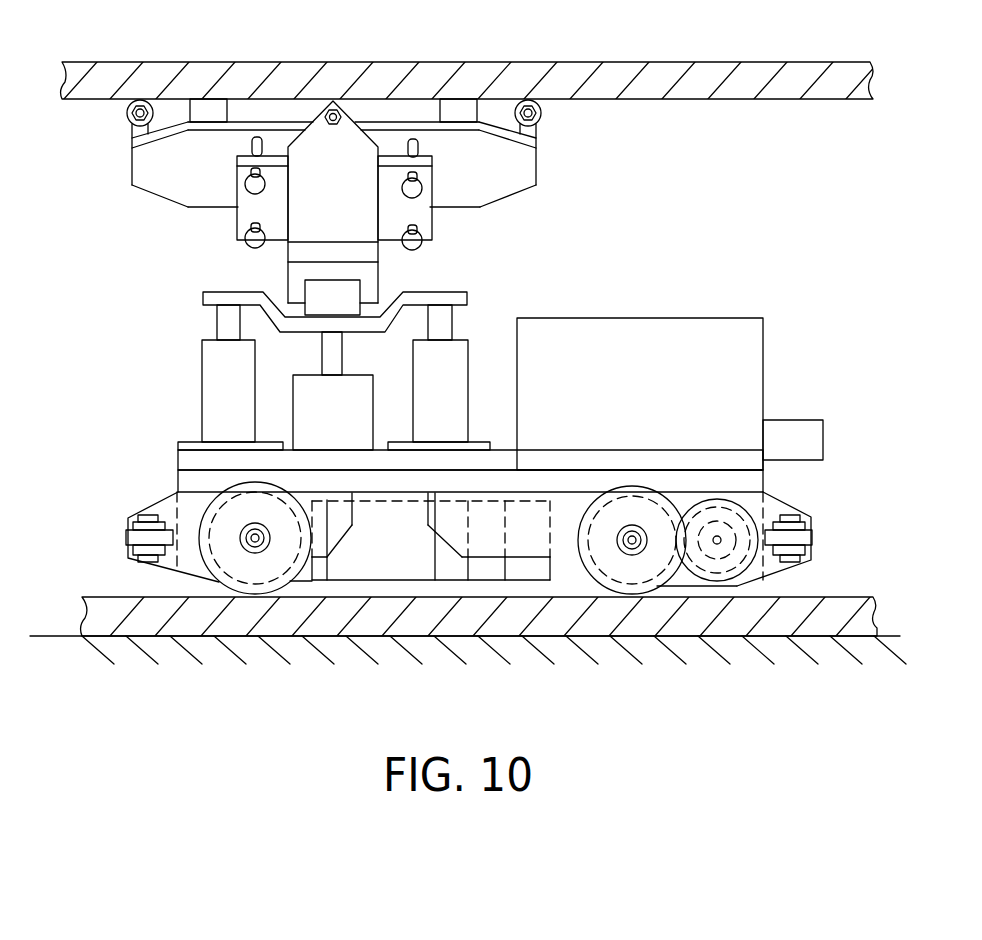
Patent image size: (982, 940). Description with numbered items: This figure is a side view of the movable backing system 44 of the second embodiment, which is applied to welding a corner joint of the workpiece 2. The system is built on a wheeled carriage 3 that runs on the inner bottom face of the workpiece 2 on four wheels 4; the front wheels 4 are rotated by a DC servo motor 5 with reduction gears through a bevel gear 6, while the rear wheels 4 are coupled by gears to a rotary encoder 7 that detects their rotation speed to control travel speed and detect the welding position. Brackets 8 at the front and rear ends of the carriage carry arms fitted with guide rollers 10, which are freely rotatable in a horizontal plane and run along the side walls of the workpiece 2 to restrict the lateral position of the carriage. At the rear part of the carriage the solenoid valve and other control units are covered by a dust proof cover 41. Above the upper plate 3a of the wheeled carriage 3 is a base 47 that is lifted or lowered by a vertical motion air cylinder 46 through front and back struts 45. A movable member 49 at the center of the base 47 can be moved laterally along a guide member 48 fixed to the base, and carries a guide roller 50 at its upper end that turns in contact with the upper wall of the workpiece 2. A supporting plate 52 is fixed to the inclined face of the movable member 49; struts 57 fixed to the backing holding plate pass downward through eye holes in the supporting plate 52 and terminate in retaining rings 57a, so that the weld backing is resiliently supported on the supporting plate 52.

The workpiece 2 is at (762, 100).
The guide roller 50 is at (340, 101).
The movable member 49 is at (300, 198).
The guide member 48 is at (355, 297).
The supporting plate 52 is at (432, 217).
The strut 57 is at (251, 144).
The retaining ring 57a is at (246, 190).
The base 47 is at (466, 292).
The strut 45 is at (212, 370).
The vertical motion air cylinder 46 is at (302, 393).
The movable backing system 44 is at (760, 288).
The dust proof cover 41 is at (757, 380).
The upper plate 3a is at (756, 480).
The wheeled carriage 3 is at (170, 486).
The bracket 8 is at (166, 508).
The guide roller 10 is at (135, 540).
The wheel 4 is at (251, 600).
The bevel gear 6 is at (286, 584).
The rotary encoder 7 is at (752, 586).
The DC servo motor 5 is at (446, 581).